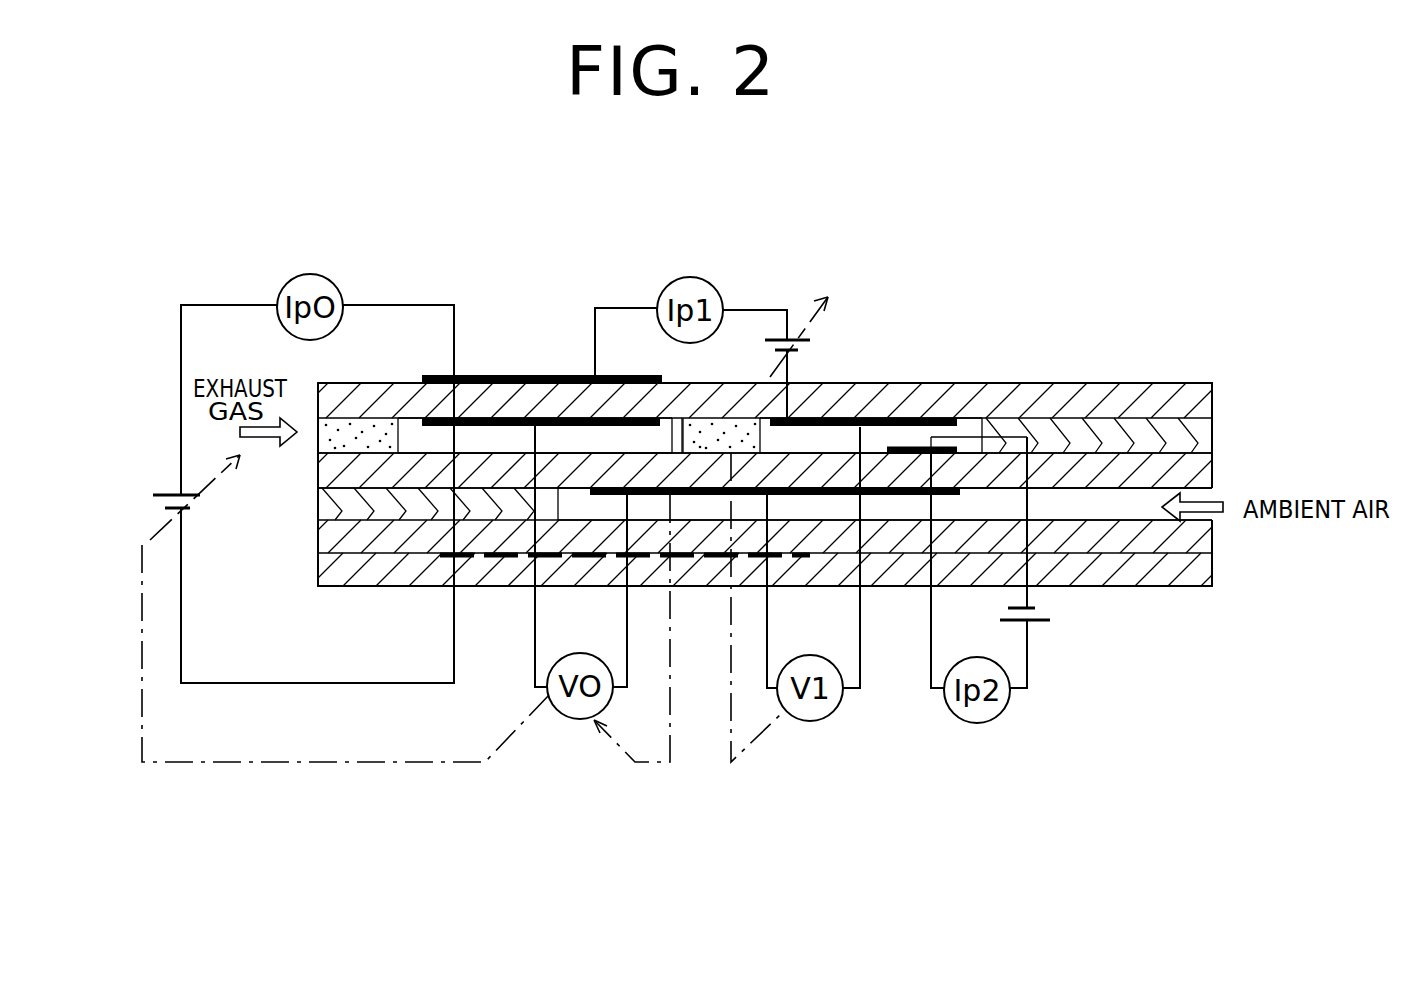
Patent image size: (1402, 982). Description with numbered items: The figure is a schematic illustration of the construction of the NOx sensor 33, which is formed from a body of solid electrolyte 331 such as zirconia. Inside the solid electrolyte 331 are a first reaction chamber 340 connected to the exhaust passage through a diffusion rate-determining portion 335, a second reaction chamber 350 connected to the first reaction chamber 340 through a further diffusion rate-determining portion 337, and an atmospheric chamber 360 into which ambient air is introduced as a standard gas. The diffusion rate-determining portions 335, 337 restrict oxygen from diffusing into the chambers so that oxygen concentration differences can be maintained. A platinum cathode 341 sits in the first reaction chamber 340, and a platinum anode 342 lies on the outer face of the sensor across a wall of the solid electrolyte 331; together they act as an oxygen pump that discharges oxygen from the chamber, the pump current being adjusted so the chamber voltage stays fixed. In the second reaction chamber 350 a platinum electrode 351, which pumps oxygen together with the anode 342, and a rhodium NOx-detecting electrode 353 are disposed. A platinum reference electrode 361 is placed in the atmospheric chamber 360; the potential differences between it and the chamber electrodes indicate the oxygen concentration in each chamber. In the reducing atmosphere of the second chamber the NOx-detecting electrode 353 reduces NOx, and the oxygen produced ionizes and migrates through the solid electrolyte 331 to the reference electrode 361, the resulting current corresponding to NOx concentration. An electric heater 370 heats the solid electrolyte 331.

The NOx sensor 33 is at (1018, 295).
The solid electrolyte 331 is at (1208, 396).
The diffusion rate-determining portion 335 is at (355, 423).
The diffusion rate-determining portion 337 is at (707, 428).
The first reaction chamber 340 is at (582, 442).
The platinum electrode (cathode) 341 is at (427, 426).
The platinum electrode (anode) 342 is at (498, 375).
The second reaction chamber 350 is at (812, 440).
The platinum electrode 351 is at (910, 418).
The NOx-detecting electrode 353 is at (958, 447).
The atmospheric chamber 360 is at (1087, 508).
The reference electrode 361 is at (897, 496).
The electric heater 370 is at (497, 560).